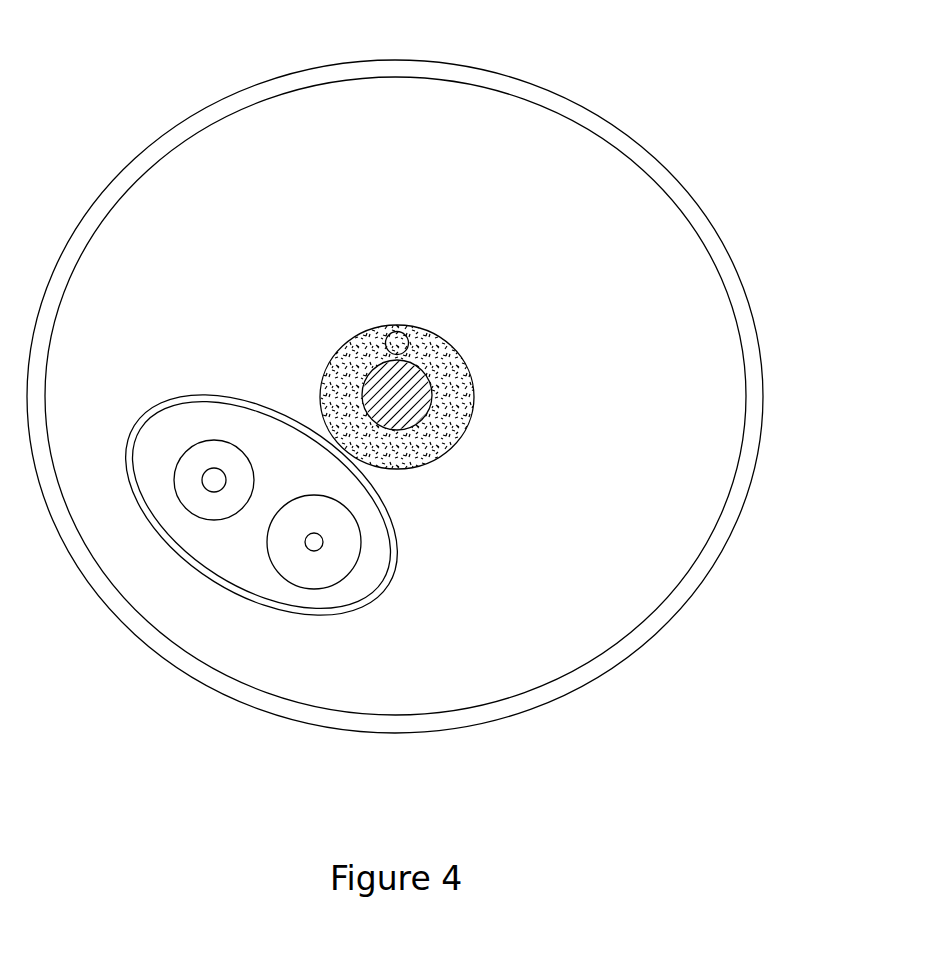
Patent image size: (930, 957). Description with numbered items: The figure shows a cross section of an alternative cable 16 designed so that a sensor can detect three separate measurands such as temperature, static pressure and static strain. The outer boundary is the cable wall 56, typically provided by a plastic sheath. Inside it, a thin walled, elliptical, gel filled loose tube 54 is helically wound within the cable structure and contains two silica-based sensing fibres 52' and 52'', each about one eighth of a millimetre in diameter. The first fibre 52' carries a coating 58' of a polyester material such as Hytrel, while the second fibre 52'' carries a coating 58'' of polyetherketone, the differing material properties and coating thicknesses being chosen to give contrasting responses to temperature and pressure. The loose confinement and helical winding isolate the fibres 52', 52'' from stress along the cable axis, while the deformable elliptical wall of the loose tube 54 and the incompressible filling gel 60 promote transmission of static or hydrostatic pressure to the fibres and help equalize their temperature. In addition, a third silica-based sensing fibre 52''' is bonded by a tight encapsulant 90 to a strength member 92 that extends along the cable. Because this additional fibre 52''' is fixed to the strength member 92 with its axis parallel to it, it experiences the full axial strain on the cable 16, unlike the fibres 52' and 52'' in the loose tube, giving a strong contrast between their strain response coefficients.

The cable 16 is at (423, 369).
The cable wall 56 is at (754, 345).
The loose tube 54 is at (390, 570).
The filling gel 60 is at (203, 548).
The coating 58' is at (176, 435).
The first sensing fibre 52' is at (257, 422).
The coating 58'' is at (336, 576).
The second sensing fibre 52'' is at (385, 516).
The additional sensing fibre 52''' is at (368, 316).
The tight encapsulant 90 is at (447, 362).
The strength member 92 is at (405, 400).